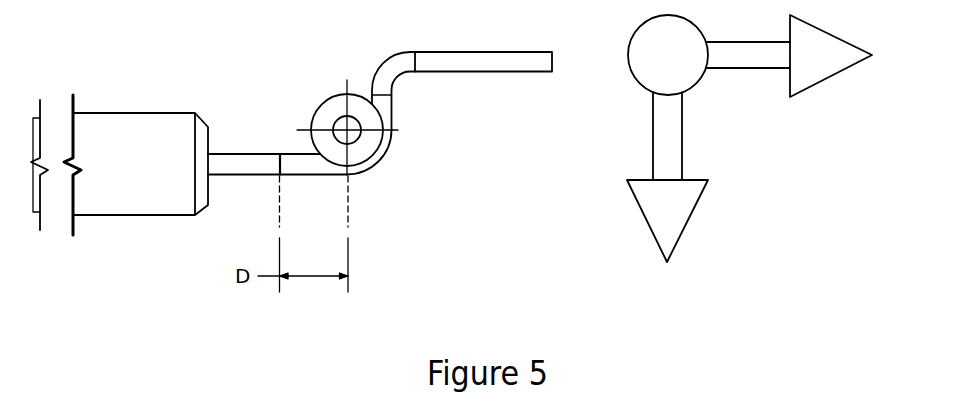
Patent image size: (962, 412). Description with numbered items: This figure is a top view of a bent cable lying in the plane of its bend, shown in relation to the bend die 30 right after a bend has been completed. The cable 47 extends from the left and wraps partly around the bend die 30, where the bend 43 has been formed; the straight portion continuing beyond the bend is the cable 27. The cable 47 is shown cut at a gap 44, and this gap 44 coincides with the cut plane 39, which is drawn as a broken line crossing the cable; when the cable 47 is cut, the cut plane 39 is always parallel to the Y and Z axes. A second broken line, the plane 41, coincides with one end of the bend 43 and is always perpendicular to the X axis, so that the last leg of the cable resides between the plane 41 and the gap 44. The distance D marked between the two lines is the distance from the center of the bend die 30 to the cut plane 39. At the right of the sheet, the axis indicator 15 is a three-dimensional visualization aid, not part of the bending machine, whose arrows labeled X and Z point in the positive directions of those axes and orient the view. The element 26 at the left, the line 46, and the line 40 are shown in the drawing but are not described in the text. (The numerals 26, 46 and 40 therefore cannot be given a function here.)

The cylindrical body with break lines 26 is at (163, 217).
The cable 47 is at (233, 155).
The gap 44 is at (280, 155).
The lower stem portion 46 is at (298, 175).
The bend die 30 is at (320, 108).
The bend 43 is at (385, 154).
The cable 27 is at (445, 72).
The cut plane 39 is at (279, 215).
The reference line 40 is at (349, 185).
The plane 41 is at (349, 220).
The axis indicator 15 is at (653, 147).